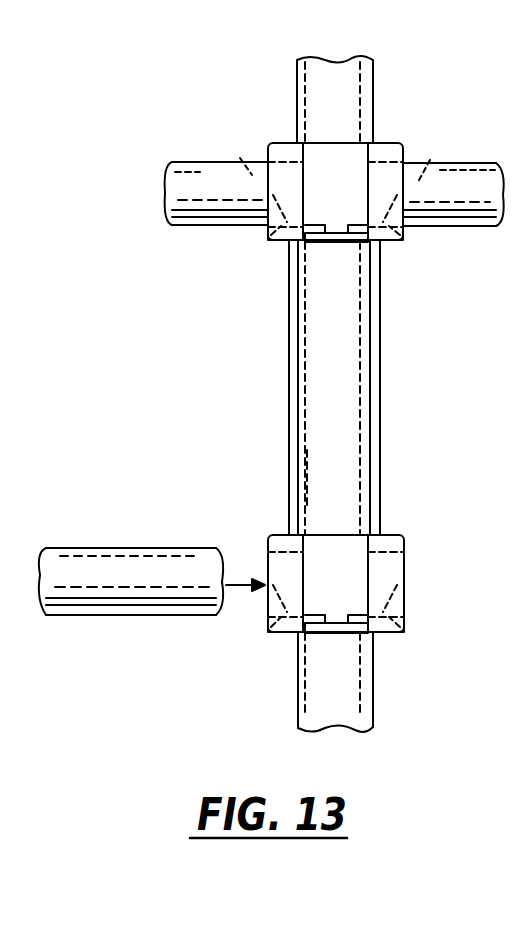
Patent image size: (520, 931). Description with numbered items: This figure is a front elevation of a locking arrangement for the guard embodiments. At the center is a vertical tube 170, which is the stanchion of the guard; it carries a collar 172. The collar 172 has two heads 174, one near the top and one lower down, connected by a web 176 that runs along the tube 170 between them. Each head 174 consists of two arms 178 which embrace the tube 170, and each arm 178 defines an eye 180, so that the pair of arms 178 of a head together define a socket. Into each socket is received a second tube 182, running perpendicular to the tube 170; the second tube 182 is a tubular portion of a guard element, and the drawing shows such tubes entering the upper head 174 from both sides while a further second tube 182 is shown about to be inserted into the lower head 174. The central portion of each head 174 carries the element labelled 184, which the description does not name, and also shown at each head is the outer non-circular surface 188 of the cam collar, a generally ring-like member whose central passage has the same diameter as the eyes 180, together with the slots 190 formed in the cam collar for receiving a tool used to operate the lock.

The tube 170 is at (310, 689).
The collar 172 is at (323, 382).
The head 174 is at (268, 145).
The web 176 is at (366, 477).
The arm 178 is at (268, 238).
The eye 180 is at (232, 150).
The second tube 182 is at (172, 206).
The block central portion 184 is at (343, 165).
The outer non-circular surface 188 is at (368, 200).
The slot 190 is at (318, 242).